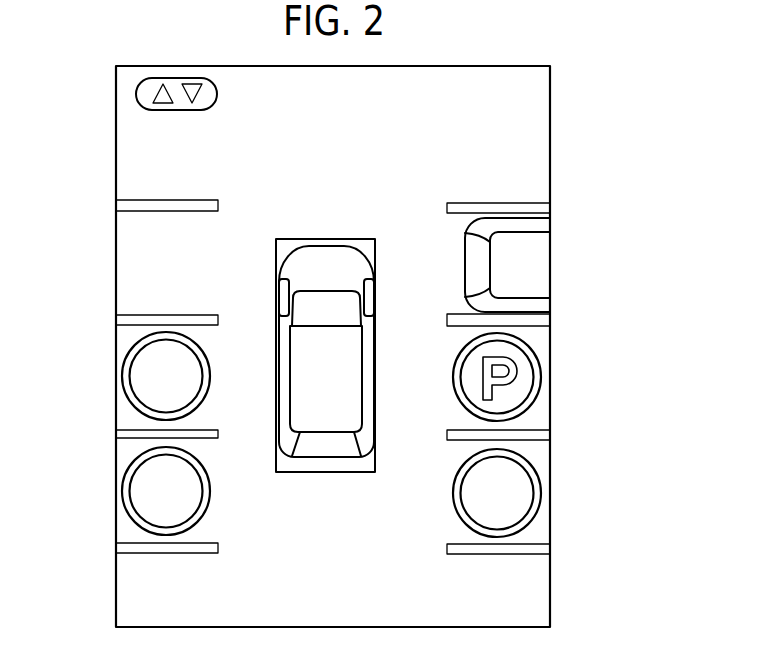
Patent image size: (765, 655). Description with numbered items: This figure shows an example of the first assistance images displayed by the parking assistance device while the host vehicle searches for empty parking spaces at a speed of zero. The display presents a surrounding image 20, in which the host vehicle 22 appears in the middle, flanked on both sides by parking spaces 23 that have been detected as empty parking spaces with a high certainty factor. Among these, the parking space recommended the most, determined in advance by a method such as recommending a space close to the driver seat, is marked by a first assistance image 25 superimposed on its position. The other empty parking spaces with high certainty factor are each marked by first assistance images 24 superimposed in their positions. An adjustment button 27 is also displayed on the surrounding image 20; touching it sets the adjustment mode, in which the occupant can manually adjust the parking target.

The surrounding image 20 is at (563, 147).
The host vehicle 22 is at (330, 239).
The parking spaces 23 is at (123, 413).
The first assistance images 24 is at (200, 390).
The first assistance image 25 is at (518, 375).
The adjustment button 27 is at (136, 93).